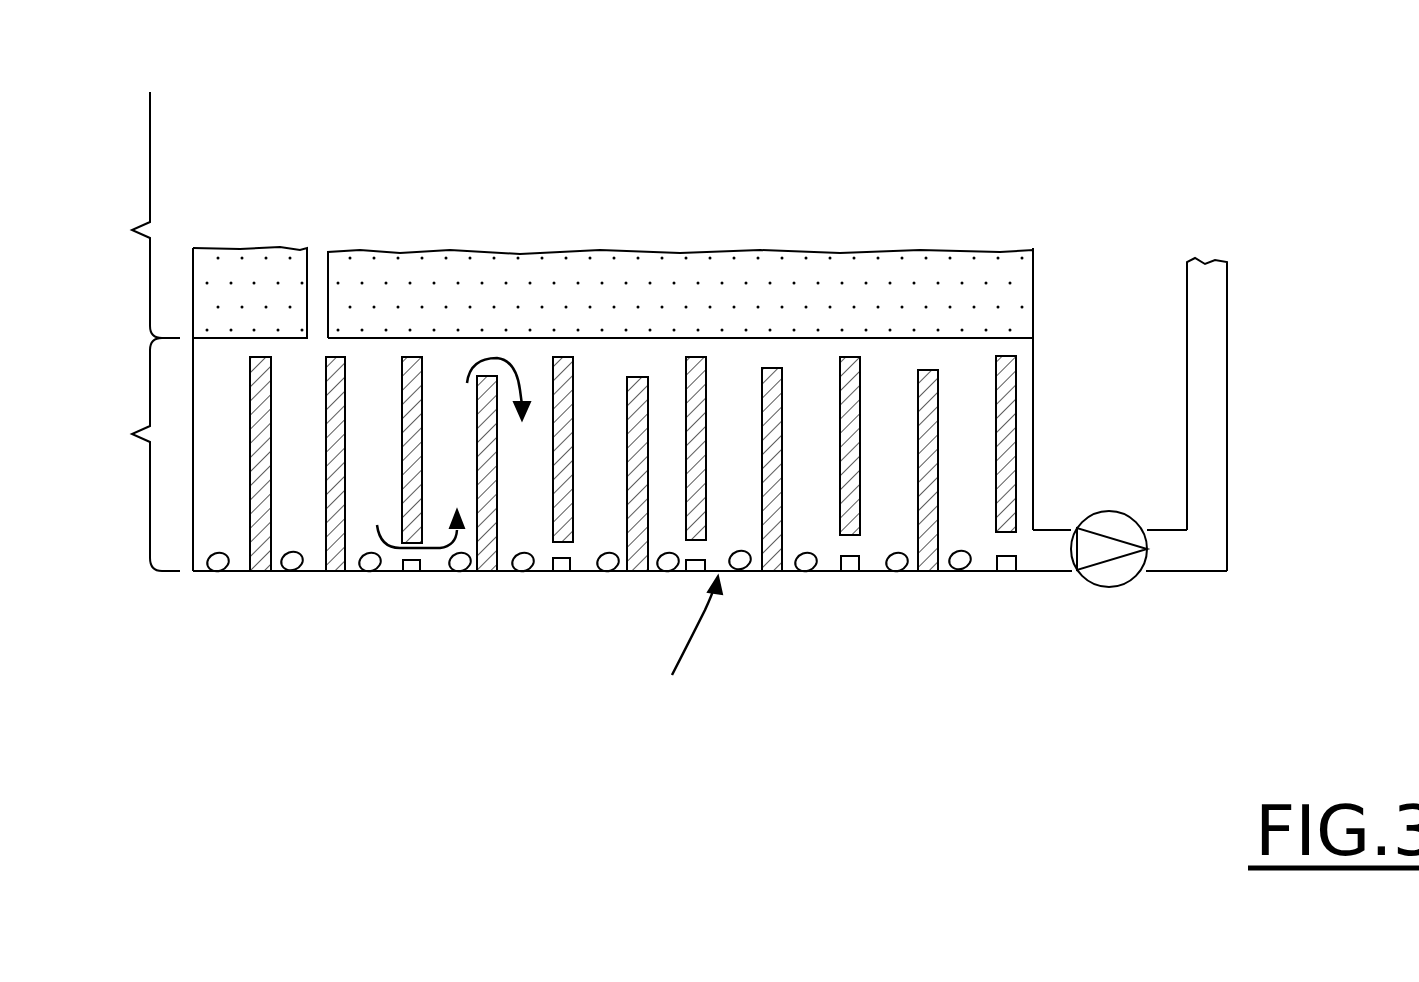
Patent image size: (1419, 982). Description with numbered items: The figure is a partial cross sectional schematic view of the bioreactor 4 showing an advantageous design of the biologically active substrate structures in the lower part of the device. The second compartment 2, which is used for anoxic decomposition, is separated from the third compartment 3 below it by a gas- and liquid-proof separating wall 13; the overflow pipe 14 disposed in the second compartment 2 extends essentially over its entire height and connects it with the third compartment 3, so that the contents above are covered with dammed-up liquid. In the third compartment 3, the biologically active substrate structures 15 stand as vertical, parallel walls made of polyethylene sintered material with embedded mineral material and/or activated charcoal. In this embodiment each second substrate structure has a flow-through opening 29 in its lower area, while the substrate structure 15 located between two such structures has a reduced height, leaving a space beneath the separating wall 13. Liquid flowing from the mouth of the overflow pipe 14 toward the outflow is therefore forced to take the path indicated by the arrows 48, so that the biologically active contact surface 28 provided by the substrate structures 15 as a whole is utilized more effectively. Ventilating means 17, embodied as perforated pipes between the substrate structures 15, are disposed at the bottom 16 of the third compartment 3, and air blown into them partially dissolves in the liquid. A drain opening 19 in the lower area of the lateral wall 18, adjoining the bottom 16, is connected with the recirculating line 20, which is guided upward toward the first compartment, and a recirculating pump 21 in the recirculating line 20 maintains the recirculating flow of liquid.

The second compartment 2 is at (126, 231).
The third compartment 3 is at (126, 435).
The bioreactor 4 is at (685, 647).
The separating wall 13 is at (867, 333).
The overflow pipe 14 is at (313, 280).
The substrate structures 15 is at (260, 515).
The bottom 16 is at (947, 573).
The ventilating means 17 is at (288, 568).
The lateral wall 18 is at (1033, 403).
The drain opening 19 is at (1032, 545).
The recirculating line 20 is at (1212, 352).
The recirculating pump 21 is at (1107, 523).
The biologically active contact surface 28 is at (645, 223).
The flow-through opening 29 is at (557, 550).
The arrows 48 is at (496, 352).